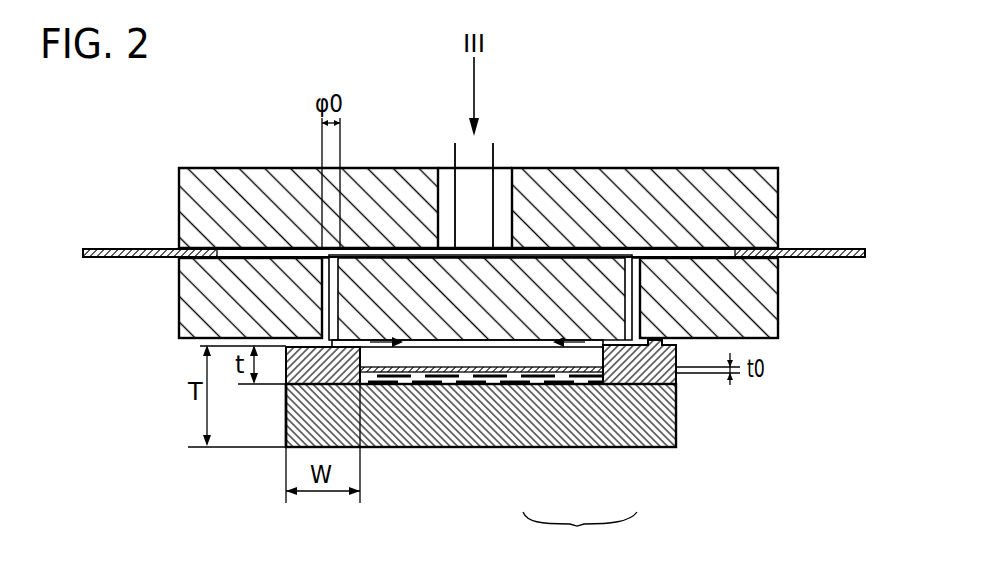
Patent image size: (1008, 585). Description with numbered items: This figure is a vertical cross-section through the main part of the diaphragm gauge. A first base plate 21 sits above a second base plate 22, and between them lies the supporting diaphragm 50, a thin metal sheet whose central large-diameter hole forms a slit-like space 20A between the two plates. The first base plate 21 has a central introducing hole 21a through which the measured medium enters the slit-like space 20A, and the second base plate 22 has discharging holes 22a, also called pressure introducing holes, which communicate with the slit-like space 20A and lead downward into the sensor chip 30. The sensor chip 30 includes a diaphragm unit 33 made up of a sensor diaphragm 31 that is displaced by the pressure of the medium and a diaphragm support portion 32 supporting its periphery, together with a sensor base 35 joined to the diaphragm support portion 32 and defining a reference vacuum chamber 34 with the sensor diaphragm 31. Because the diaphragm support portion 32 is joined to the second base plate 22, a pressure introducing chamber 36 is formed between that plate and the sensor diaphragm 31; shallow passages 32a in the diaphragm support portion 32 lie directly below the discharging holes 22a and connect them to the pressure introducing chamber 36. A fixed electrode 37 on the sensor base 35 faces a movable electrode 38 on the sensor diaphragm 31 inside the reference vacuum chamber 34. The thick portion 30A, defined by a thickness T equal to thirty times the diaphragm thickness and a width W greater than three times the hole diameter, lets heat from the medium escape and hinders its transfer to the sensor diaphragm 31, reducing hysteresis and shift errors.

The slit-like space 20A is at (491, 256).
The first base plate 21 is at (743, 208).
The introducing hole 21a is at (490, 192).
The second base plate 22 is at (760, 300).
The discharging holes 22a is at (322, 290).
The sensor chip 30 is at (499, 450).
The thick portion 30A is at (298, 424).
The sensor diaphragm 31 is at (522, 385).
The diaphragm support portion 32 is at (632, 386).
The passages 32a is at (317, 323).
The diaphragm unit 33 is at (580, 536).
The reference vacuum chamber 34 is at (402, 384).
The sensor base 35 is at (676, 415).
The pressure introducing chamber 36 is at (448, 355).
The fixed electrode 37 is at (490, 377).
The movable electrode 38 is at (455, 382).
The supporting diaphragm 50 is at (142, 248).